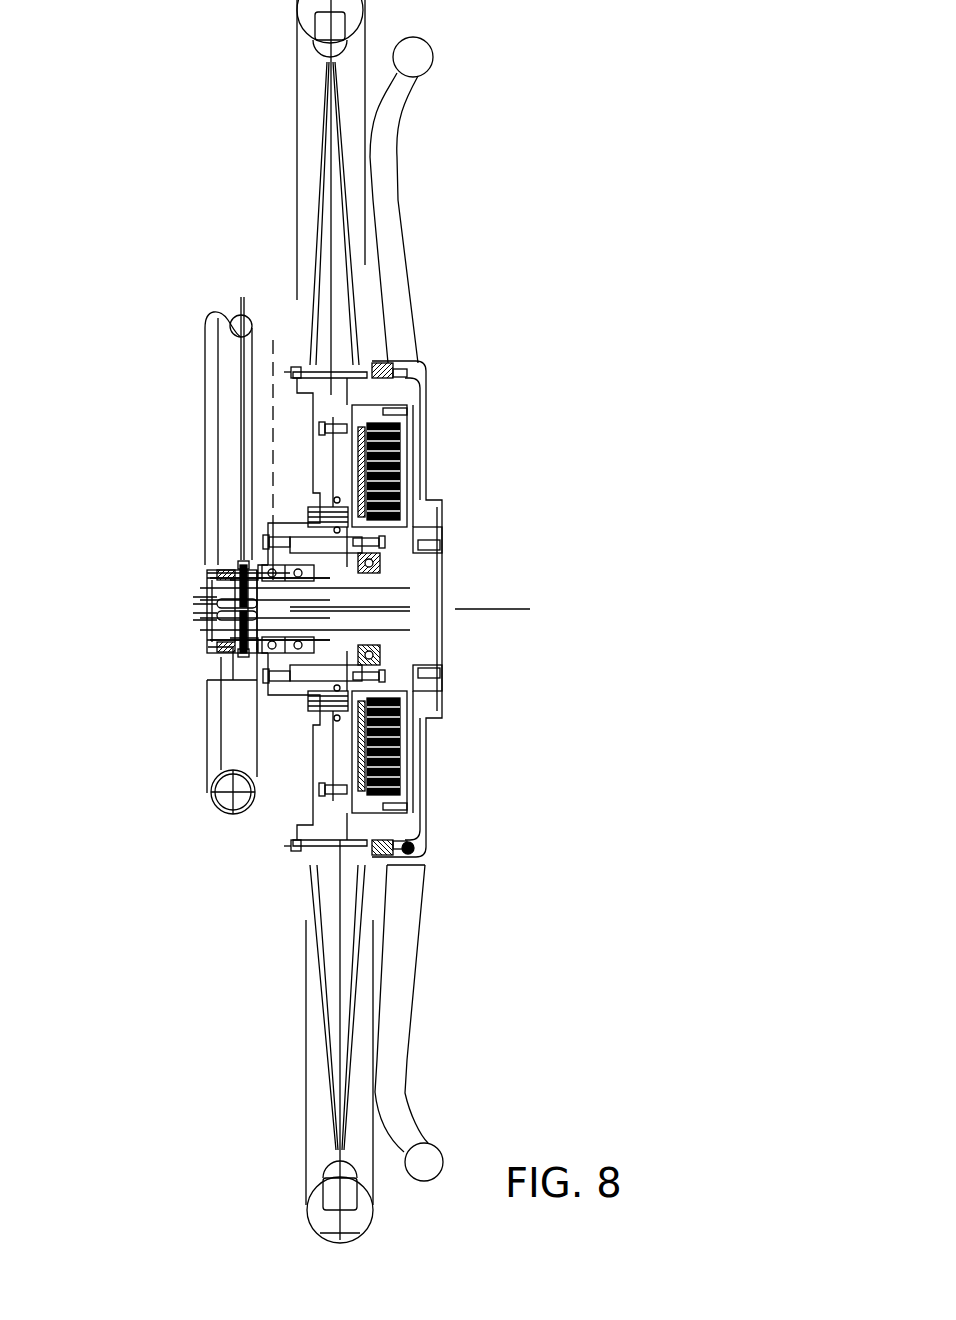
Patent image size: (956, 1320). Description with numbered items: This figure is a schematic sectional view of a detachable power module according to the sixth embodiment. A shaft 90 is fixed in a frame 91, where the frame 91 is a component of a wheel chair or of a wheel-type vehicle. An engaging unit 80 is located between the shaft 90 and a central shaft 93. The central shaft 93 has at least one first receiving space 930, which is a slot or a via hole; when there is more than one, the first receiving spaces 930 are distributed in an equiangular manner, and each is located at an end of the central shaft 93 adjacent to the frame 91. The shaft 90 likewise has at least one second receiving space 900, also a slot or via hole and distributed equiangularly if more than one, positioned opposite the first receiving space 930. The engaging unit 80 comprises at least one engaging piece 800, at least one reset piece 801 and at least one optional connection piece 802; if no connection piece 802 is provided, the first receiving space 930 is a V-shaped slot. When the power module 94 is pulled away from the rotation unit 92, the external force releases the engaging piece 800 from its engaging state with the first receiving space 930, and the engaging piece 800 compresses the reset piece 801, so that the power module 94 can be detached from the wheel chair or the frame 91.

The engaging unit 80 is at (92, 582).
The engaging piece 800 is at (210, 575).
The reset piece 801 is at (238, 572).
The connection piece 802 is at (242, 563).
The second receiving space 900 is at (251, 558).
The first receiving space 930 is at (208, 597).
The shaft 90 is at (207, 641).
The central shaft 93 is at (208, 651).
The frame 91 is at (217, 745).
The rotation unit 92 is at (447, 988).
The power module 94 is at (405, 465).